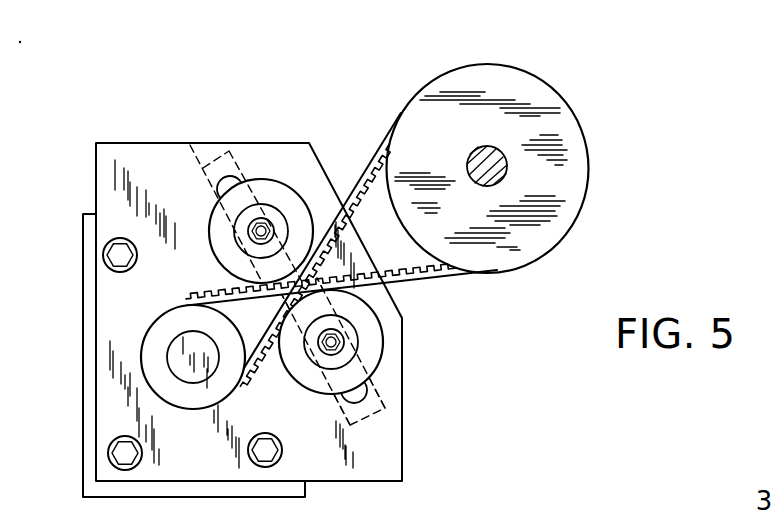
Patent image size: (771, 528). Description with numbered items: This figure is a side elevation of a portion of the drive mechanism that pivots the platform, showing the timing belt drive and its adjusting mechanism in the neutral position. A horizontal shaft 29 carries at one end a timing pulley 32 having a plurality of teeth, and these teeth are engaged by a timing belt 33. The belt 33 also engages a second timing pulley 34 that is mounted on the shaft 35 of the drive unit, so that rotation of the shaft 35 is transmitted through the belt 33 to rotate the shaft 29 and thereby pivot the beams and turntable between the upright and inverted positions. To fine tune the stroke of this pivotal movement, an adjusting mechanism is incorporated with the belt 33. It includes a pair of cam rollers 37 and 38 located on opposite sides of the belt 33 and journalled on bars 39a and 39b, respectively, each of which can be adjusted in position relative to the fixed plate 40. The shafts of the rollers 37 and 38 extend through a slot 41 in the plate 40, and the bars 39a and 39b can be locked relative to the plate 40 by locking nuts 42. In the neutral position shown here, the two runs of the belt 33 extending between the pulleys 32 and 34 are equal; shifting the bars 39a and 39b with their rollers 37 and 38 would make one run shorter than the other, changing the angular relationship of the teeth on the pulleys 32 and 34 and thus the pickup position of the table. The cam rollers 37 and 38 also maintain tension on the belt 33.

The horizontal shaft 29 is at (505, 158).
The timing pulley 32 is at (542, 96).
The timing belt 33 is at (422, 287).
The second timing pulley 34 is at (142, 332).
The shaft 35 is at (178, 358).
The cam roller 37 is at (273, 190).
The cam roller 38 is at (372, 355).
The bar 39a is at (190, 145).
The bar 39b is at (385, 408).
The fixed plate 40 is at (373, 467).
The slot 41 is at (231, 177).
The locking nuts 42 is at (248, 238).